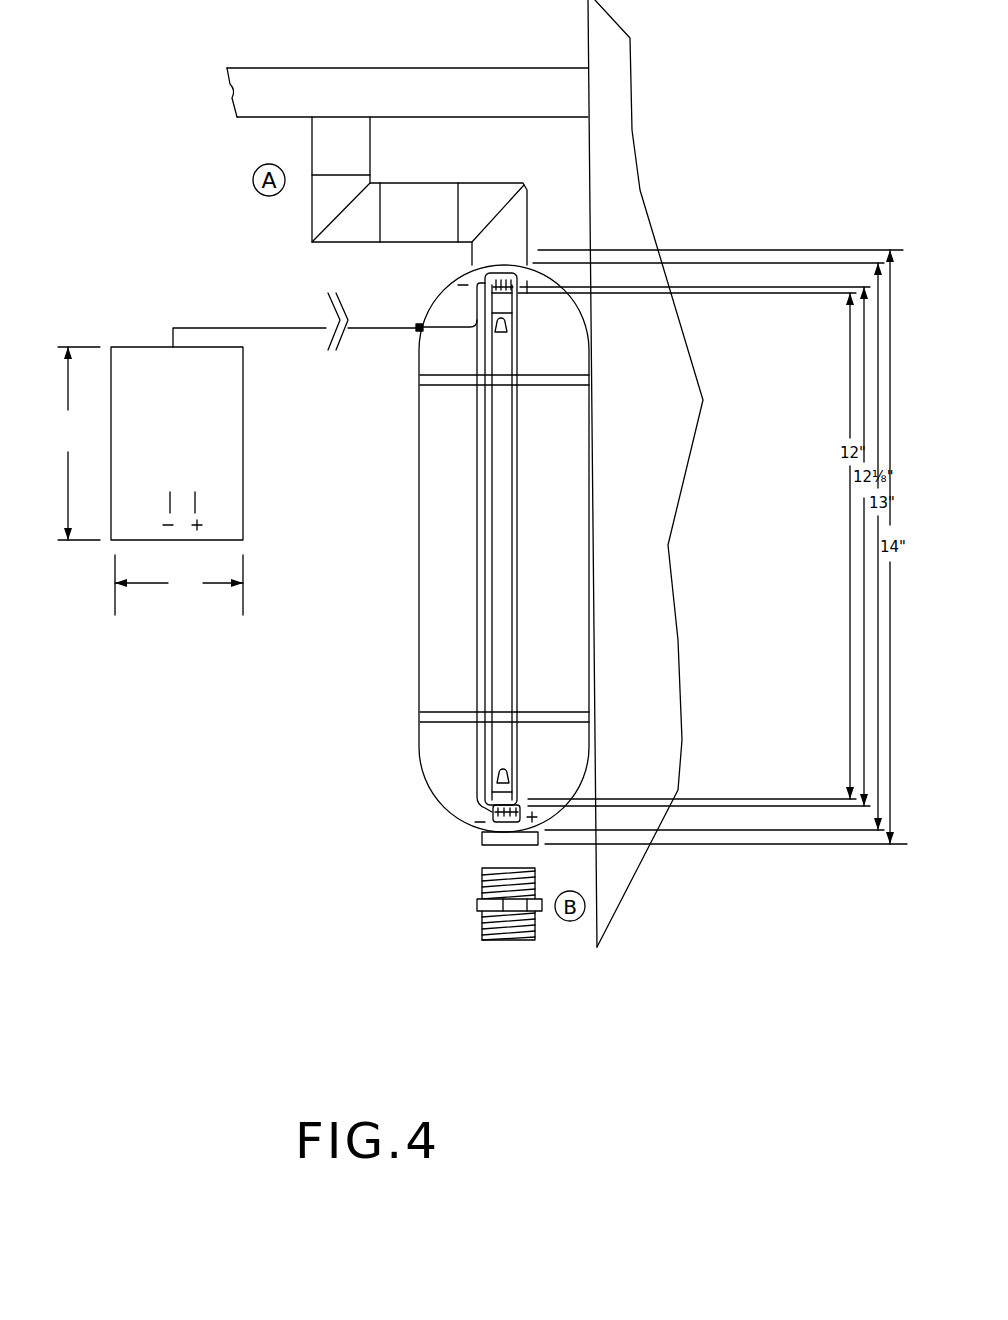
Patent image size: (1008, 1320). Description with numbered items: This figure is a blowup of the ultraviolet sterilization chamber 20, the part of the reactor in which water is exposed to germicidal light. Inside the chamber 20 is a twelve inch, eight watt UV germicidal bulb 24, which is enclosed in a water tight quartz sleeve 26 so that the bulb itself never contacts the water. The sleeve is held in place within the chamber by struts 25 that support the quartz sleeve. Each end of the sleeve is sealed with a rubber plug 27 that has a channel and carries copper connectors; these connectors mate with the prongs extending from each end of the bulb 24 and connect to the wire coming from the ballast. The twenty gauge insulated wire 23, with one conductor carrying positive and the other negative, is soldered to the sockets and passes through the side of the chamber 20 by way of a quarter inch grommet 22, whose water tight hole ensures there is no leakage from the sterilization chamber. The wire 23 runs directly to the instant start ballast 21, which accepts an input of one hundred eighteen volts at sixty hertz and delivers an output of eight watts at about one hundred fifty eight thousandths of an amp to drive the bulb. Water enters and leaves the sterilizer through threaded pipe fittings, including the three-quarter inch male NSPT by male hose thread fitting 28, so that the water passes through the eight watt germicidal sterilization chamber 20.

The ultraviolet sterilization chamber 20 is at (418, 588).
The instant start ballast 21 is at (117, 347).
The grommet for exit of wire 22 is at (417, 332).
The insulated wire 23 is at (478, 630).
The UV germicidal bulb 24 is at (505, 657).
The struts to support quartz sleeve 25 is at (490, 710).
The water tight quartz sleeve 26 is at (490, 783).
The rubber plug with copper connectors 27 is at (492, 825).
The male NSPT by male hose thread fitting 28 is at (481, 943).